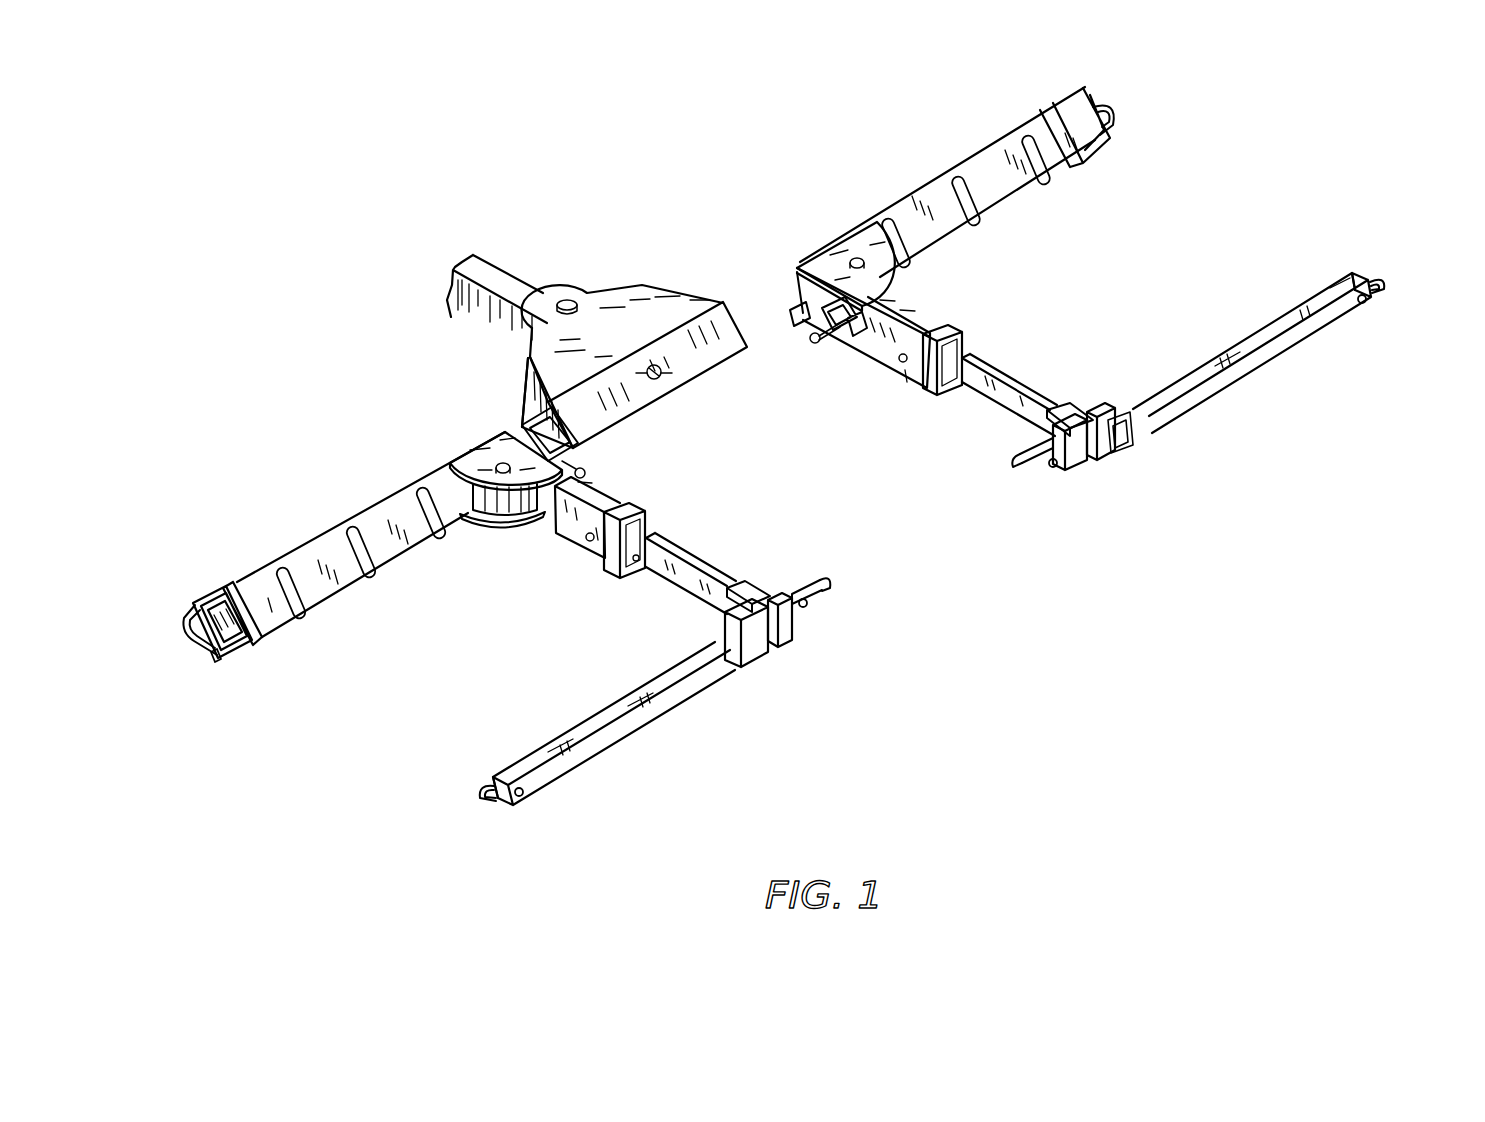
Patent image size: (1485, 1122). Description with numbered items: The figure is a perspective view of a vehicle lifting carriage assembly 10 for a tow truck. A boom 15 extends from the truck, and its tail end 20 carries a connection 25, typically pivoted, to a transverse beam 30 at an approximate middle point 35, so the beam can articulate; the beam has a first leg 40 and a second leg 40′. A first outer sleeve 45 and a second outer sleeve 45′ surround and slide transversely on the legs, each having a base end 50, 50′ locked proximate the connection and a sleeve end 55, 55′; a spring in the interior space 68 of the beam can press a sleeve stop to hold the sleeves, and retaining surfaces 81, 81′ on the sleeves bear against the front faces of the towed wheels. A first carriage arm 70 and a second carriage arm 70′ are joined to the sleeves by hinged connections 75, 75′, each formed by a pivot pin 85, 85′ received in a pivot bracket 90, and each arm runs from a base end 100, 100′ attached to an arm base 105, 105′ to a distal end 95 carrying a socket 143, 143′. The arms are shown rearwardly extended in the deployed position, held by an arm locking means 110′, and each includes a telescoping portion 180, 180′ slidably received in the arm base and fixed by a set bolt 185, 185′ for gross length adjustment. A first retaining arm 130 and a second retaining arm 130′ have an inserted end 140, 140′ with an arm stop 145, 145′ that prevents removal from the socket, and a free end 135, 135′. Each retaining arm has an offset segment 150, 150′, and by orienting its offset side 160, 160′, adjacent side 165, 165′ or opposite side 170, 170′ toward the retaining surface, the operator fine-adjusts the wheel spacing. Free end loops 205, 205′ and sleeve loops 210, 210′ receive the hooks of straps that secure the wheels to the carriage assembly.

The carriage assembly 10 is at (993, 618).
The boom 15 is at (485, 262).
The tail end 20 is at (533, 335).
The connection 25 is at (615, 290).
The transverse beam 30 is at (750, 298).
The middle point 35 is at (657, 396).
The first leg 40 is at (517, 423).
The second leg 40′ is at (790, 268).
The first outer sleeve 45 is at (317, 543).
The second outer sleeve 45′ is at (990, 150).
The base end 50 is at (493, 440).
The base end 50′ is at (818, 252).
The sleeve end 55 is at (240, 583).
The sleeve end 55′ is at (1058, 115).
The interior space 68 is at (217, 652).
The first carriage arm 70 is at (610, 578).
The second carriage arm 70′ is at (927, 392).
The hinged connection 75 is at (479, 534).
The hinged connection 75′ is at (886, 288).
The retaining surface 81 is at (358, 573).
The retaining surface 81′ is at (970, 222).
The pivot pin 85 is at (498, 468).
The pivot pin 85′ is at (859, 258).
The pivot bracket 90 is at (503, 510).
The distal end 95 is at (727, 608).
The base end 100 is at (570, 528).
The base end 100′ is at (888, 340).
The arm base 105 is at (582, 468).
The arm base 105′ is at (832, 302).
The arm locking means 110′ is at (834, 346).
The first retaining arm 130 is at (686, 706).
The second retaining arm 130′ is at (1248, 382).
The free end 135 is at (508, 778).
The free end 135′ is at (1350, 281).
The inserted end 140 is at (793, 583).
The inserted end 140′ is at (1040, 443).
The socket 143 is at (750, 600).
The socket 143′ is at (1080, 465).
The arm stop 145 is at (812, 608).
The arm stop 145′ is at (1053, 467).
The offset segment 150 is at (780, 592).
The offset segment 150′ is at (1040, 437).
The offset side 160 is at (573, 730).
The offset side 160′ is at (1197, 367).
The adjacent side 165 is at (585, 736).
The adjacent side 165′ is at (1237, 351).
The opposite side 170 is at (635, 720).
The opposite side 170′ is at (1195, 400).
The telescoping portion 180 is at (683, 562).
The telescoping portion 180′ is at (980, 390).
The set bolt 185 is at (592, 532).
The set bolt 185′ is at (903, 362).
The free end loop 205 is at (487, 812).
The free end loop 205′ is at (1380, 285).
The sleeve loop 210 is at (187, 633).
The sleeve loop 210′ is at (1118, 122).